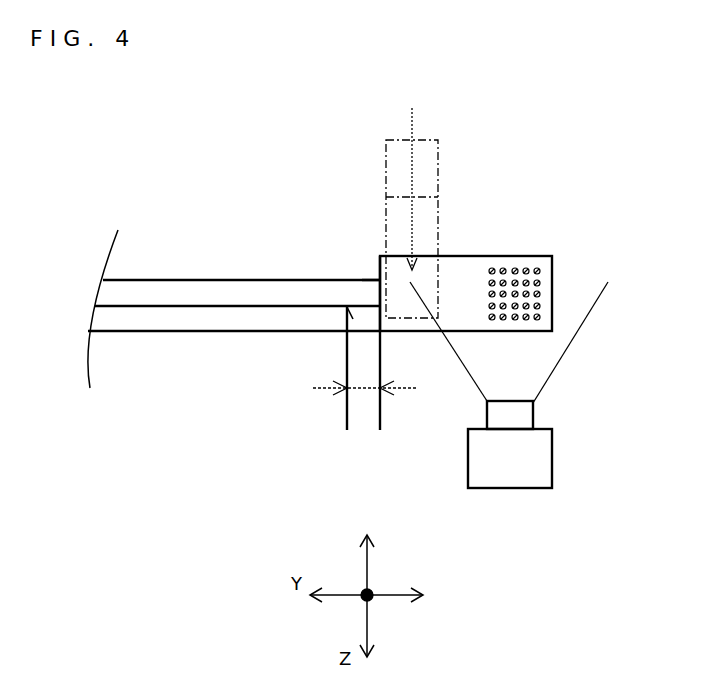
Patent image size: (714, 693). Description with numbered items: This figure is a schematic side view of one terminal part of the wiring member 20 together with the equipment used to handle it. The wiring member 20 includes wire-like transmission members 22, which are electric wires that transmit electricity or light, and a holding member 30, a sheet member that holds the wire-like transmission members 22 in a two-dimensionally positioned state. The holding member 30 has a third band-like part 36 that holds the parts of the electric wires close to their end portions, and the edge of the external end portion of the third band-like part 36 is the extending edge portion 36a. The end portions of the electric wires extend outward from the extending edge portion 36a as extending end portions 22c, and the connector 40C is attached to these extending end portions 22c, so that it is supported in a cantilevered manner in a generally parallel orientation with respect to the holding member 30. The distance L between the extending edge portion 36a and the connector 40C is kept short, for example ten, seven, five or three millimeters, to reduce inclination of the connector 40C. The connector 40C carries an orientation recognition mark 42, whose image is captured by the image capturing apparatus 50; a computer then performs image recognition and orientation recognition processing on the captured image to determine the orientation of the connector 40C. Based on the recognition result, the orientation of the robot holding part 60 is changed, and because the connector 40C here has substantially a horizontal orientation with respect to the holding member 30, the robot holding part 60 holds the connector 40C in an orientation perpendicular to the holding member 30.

The wiring member 20 is at (247, 226).
The wire-like transmission member 22 is at (204, 279).
The extending end portion 22c is at (365, 279).
The holding member 30 is at (173, 333).
The third band-like part 36 is at (240, 333).
The extending edge portion 36a is at (349, 305).
The connector 40C is at (510, 256).
The orientation recognition mark 42 is at (541, 256).
The image capturing apparatus 50 is at (553, 458).
The robot holding part 60 is at (439, 213).
The distance L is at (360, 390).